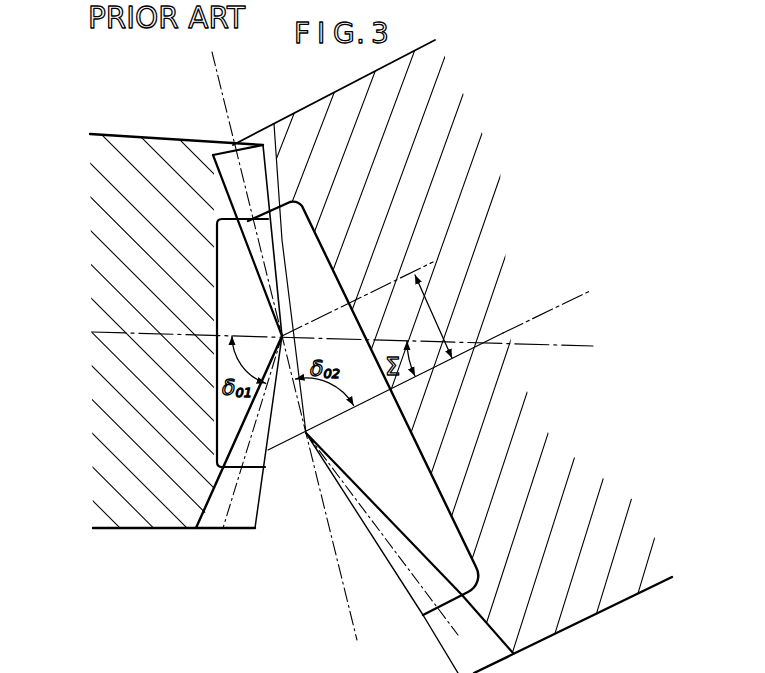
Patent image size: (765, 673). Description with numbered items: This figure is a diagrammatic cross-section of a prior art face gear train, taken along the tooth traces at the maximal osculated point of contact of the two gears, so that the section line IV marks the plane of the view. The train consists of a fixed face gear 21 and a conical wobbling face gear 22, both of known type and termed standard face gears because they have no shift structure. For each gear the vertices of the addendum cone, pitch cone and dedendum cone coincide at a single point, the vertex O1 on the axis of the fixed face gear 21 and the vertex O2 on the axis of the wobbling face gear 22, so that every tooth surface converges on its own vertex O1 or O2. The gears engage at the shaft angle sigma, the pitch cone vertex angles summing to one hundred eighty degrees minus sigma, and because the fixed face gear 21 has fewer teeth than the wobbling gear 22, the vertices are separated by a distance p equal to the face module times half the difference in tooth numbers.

The fixed face gear 21 is at (162, 493).
The conical wobbling face gear 22 is at (543, 529).
The vertex of the pitch cone of the fixed face gear O1 is at (284, 334).
The vertex of the pitch cone of the conical wobbling face gear O2 is at (305, 436).
The section line IV- IV is at (214, 73).
The distance between the vertices p is at (433, 316).